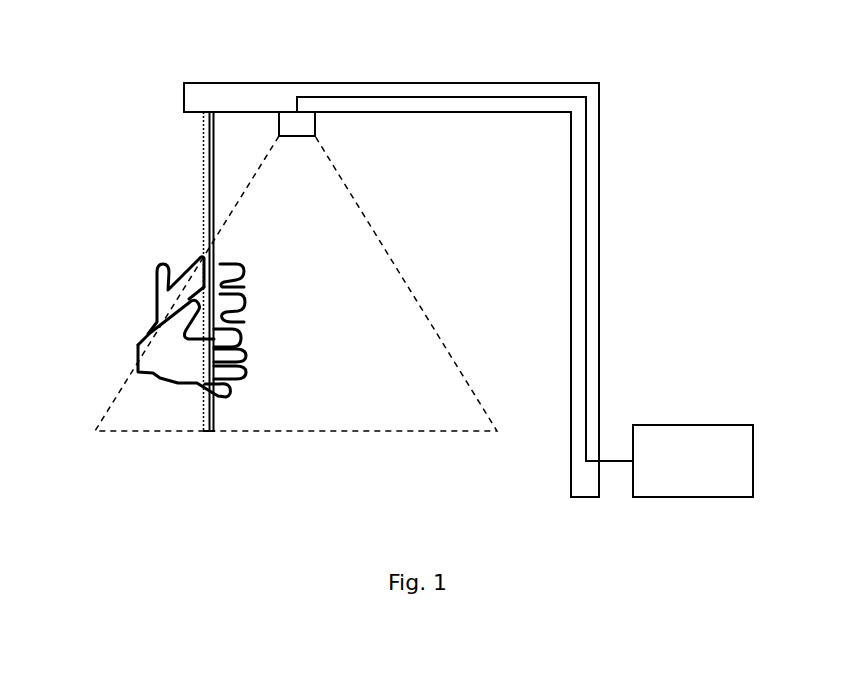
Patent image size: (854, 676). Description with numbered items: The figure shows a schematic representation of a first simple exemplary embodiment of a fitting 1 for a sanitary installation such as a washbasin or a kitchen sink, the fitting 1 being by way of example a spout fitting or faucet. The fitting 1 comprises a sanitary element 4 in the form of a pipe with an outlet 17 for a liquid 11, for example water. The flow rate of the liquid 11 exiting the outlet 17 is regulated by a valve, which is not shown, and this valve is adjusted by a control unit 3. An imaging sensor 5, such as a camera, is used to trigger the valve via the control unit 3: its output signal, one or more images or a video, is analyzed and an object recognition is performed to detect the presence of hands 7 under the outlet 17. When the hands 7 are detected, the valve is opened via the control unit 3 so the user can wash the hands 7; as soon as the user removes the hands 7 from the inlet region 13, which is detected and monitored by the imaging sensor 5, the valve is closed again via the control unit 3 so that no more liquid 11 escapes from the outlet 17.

The fitting 1 is at (135, 61).
The control unit 3 is at (699, 404).
The sanitary element 4 is at (395, 63).
The imaging sensor 5 is at (337, 142).
The hands 7 is at (168, 407).
The liquid 11 is at (185, 207).
The inlet region 13 is at (410, 263).
The outlet 17 is at (183, 123).